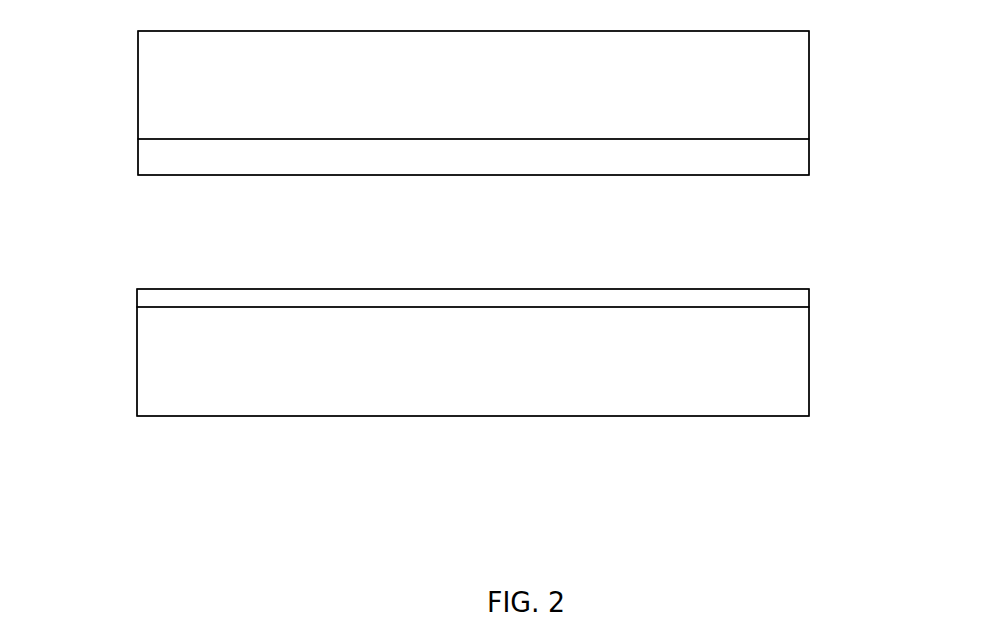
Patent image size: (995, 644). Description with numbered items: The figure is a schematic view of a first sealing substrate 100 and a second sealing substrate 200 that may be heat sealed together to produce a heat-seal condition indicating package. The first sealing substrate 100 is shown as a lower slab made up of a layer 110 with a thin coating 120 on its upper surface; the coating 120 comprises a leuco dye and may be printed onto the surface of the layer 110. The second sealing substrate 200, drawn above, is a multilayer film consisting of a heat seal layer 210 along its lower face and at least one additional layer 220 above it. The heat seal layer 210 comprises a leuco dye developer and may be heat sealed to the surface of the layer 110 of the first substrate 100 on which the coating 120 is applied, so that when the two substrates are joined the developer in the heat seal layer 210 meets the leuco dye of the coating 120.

The second sealing substrate 200 is at (86, 82).
The additional layer 220 is at (809, 84).
The heat seal layer 210 is at (809, 155).
The first sealing substrate 100 is at (88, 336).
The coating 120 is at (809, 300).
The layer 110 is at (809, 377).